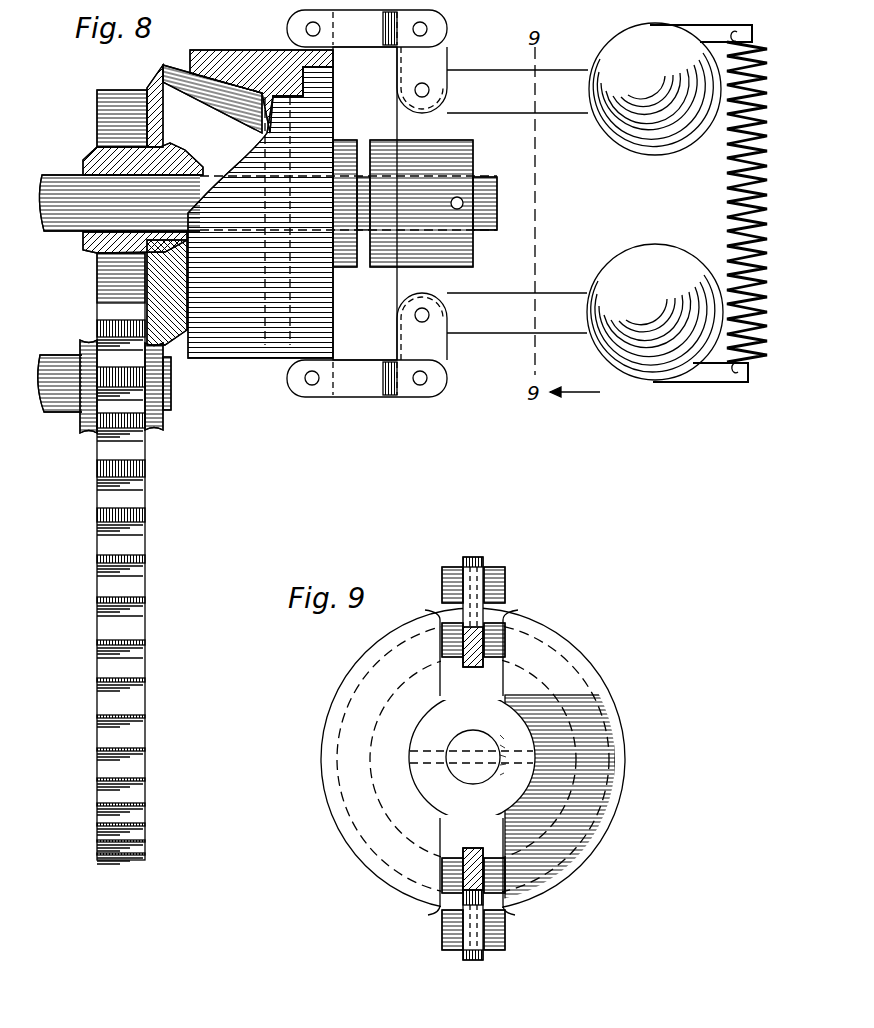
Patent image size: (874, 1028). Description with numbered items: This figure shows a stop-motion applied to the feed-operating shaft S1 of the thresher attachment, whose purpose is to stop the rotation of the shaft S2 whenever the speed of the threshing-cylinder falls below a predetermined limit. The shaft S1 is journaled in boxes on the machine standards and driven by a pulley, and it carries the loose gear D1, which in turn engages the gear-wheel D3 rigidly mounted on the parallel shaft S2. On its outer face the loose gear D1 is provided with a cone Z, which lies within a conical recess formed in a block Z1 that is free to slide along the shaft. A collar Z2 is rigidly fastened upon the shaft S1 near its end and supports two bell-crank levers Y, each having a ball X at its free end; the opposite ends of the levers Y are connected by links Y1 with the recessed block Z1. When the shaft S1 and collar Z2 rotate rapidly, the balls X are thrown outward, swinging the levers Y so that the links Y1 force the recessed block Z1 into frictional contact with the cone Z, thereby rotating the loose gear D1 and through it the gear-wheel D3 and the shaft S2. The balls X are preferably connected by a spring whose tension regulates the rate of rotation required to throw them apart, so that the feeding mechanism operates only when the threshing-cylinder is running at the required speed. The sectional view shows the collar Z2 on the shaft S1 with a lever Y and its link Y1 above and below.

In FIG. 8, the cone Z is at (163, 77).
In FIG. 8, the recessed block Z1 is at (261, 50).
In FIG. 8, the collar Z2 is at (450, 240).
In FIG. 9, the collar Z2 is at (472, 757).
In FIG. 8, the loose gear D1 is at (107, 117).
In FIG. 8, the gear-wheel D3 is at (97, 560).
In FIG. 8, the feed-operating shaft S1 is at (50, 175).
In FIG. 9, the feed-operating shaft S1 is at (457, 740).
In FIG. 8, the shaft S2 is at (52, 357).
In FIG. 8, the bell-crank lever Y is at (462, 92).
In FIG. 9, the bell-crank lever Y is at (487, 627).
In FIG. 8, the link Y1 is at (388, 40).
In FIG. 9, the link Y1 is at (493, 562).
In FIG. 8, the ball X is at (620, 130).